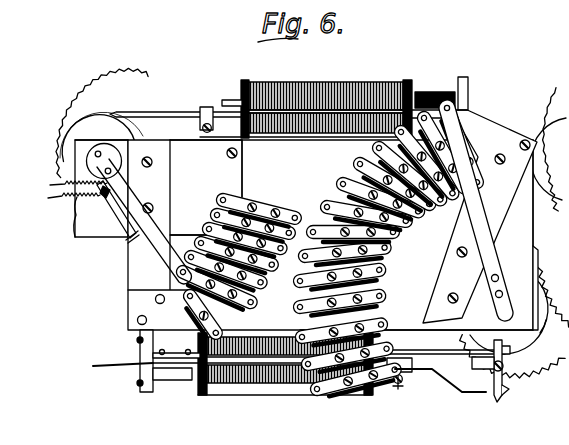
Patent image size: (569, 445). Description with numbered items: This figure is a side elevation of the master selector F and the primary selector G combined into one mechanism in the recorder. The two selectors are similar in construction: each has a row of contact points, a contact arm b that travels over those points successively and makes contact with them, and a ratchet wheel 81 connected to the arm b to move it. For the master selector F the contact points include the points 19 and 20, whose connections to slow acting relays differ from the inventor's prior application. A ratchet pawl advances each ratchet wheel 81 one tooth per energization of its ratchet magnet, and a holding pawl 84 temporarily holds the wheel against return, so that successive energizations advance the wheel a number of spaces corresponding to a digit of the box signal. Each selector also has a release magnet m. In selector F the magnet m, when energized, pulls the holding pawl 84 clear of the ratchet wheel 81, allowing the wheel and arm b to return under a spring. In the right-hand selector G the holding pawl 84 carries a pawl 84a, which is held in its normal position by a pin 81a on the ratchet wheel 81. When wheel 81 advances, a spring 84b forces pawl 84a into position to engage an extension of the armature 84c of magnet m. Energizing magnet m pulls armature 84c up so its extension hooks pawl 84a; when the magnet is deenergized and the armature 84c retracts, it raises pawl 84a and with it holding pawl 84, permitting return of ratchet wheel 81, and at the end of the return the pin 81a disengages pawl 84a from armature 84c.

The ratchet wheel 81 is at (93, 116).
The pin 81a is at (508, 352).
The holding pawl 84 is at (148, 113).
The pawl 84a is at (504, 380).
The spring 84b is at (508, 392).
The armature 84c is at (456, 394).
The contact point 20 is at (114, 212).
The contact point 19 is at (131, 240).
The release magnet m is at (312, 88).
The contact arm b is at (157, 243).
The master selector F is at (206, 187).
The primary selector G is at (416, 235).